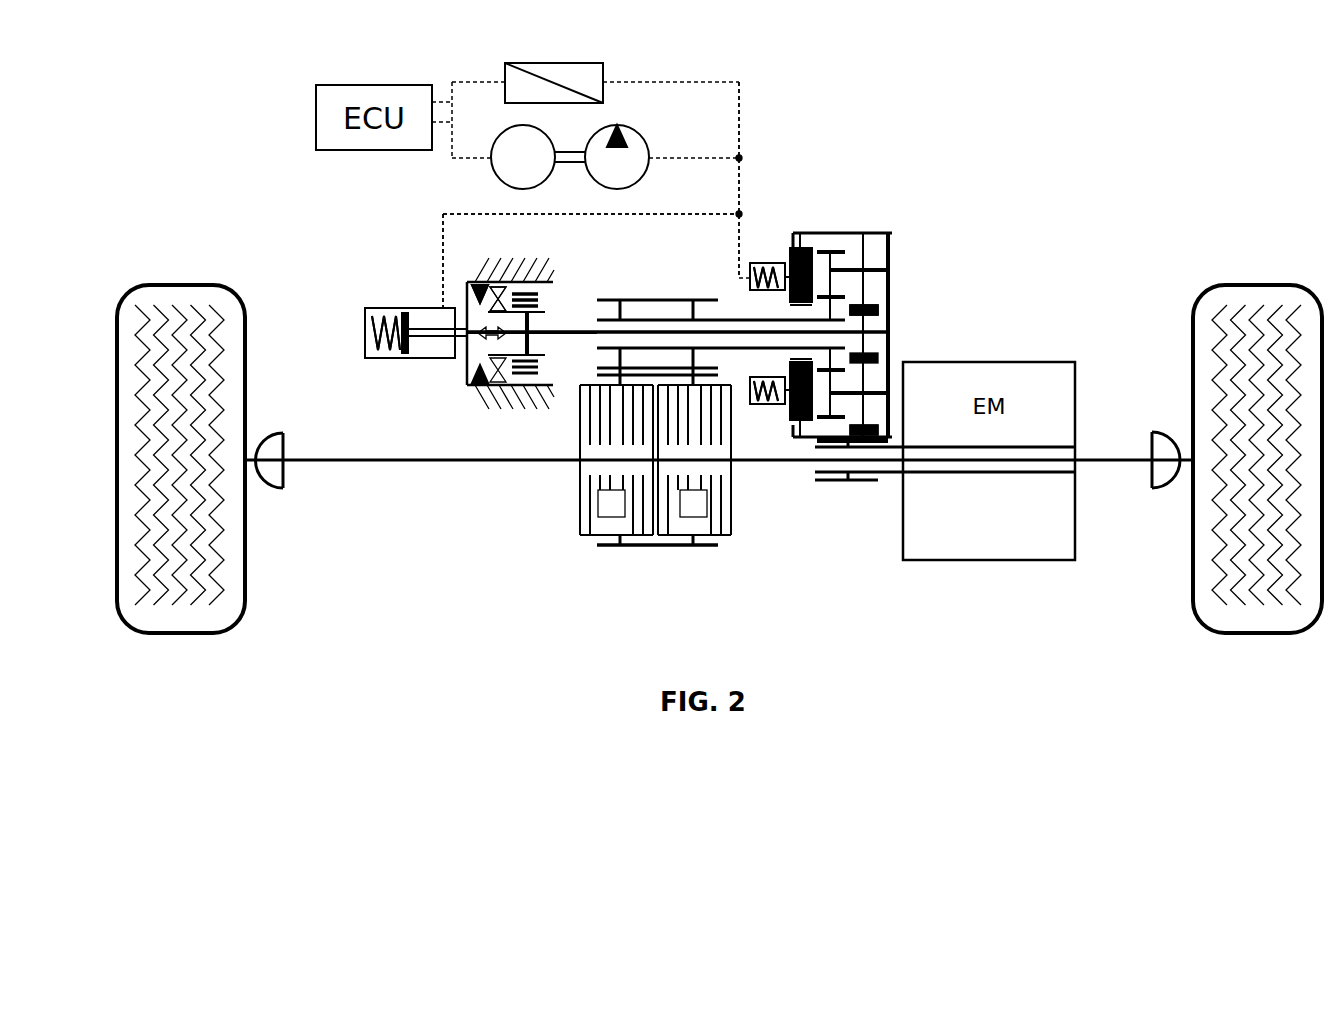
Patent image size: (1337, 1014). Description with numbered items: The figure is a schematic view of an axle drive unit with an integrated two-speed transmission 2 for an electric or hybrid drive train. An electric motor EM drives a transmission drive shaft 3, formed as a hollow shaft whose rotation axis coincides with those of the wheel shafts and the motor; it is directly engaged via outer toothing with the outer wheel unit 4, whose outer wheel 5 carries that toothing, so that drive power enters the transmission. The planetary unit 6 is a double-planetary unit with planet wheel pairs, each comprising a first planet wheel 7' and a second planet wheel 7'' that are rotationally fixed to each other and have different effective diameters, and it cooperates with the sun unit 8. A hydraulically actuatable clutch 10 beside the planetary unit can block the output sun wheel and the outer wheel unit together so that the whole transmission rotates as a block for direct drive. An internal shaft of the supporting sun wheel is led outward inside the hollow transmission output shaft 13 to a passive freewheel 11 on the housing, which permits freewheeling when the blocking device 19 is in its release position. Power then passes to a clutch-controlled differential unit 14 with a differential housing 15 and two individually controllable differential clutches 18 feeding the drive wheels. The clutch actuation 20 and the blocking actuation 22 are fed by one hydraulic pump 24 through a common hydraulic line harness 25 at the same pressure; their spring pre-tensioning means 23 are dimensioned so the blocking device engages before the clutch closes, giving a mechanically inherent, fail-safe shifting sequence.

The two-speed transmission 2 is at (912, 202).
The transmission drive shaft 3 is at (862, 482).
The outer wheel unit 4 is at (890, 298).
The outer wheel 5 is at (890, 298).
The planetary unit 6 is at (890, 262).
The first planet wheel 7' is at (843, 283).
The second planet wheel 7'' is at (876, 265).
The sun unit 8 is at (890, 330).
The clutch 10 is at (800, 247).
The freewheel 11 is at (553, 298).
The transmission output shaft 13 is at (633, 298).
The differential unit 14 is at (592, 578).
The differential housing 15 is at (682, 548).
The differential clutches 18 is at (652, 503).
The blocking device 19 is at (420, 381).
The clutch actuation 20 is at (758, 261).
The blocking actuation 22 is at (375, 308).
The pre-tensioning means 23 is at (370, 360).
The hydraulic pump 24 is at (650, 138).
The hydraulic line harness 25 is at (700, 156).